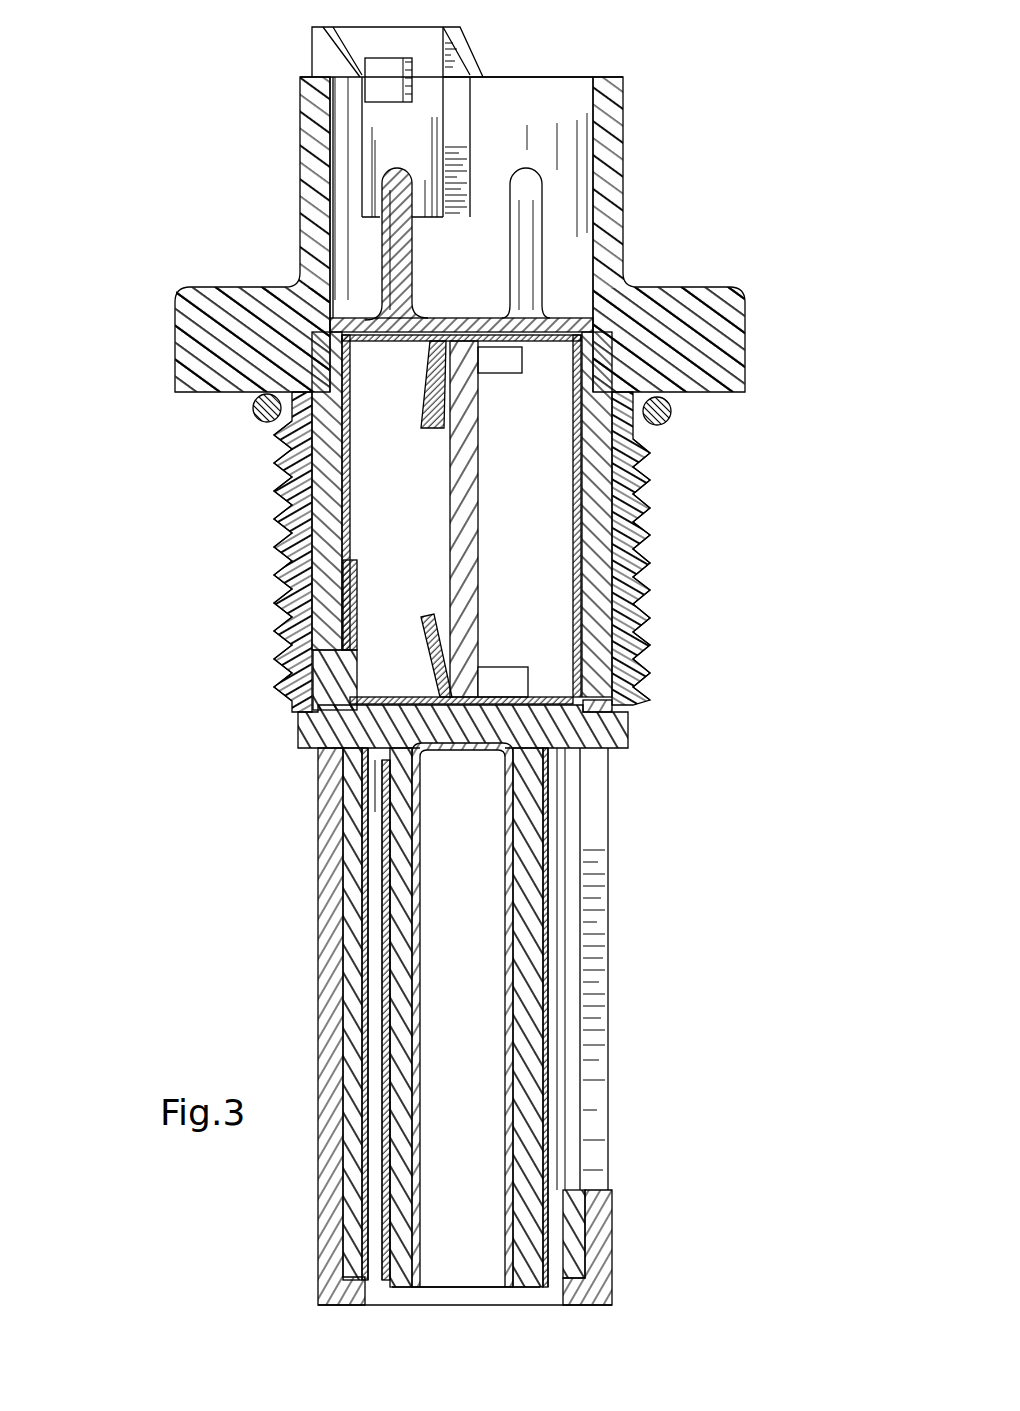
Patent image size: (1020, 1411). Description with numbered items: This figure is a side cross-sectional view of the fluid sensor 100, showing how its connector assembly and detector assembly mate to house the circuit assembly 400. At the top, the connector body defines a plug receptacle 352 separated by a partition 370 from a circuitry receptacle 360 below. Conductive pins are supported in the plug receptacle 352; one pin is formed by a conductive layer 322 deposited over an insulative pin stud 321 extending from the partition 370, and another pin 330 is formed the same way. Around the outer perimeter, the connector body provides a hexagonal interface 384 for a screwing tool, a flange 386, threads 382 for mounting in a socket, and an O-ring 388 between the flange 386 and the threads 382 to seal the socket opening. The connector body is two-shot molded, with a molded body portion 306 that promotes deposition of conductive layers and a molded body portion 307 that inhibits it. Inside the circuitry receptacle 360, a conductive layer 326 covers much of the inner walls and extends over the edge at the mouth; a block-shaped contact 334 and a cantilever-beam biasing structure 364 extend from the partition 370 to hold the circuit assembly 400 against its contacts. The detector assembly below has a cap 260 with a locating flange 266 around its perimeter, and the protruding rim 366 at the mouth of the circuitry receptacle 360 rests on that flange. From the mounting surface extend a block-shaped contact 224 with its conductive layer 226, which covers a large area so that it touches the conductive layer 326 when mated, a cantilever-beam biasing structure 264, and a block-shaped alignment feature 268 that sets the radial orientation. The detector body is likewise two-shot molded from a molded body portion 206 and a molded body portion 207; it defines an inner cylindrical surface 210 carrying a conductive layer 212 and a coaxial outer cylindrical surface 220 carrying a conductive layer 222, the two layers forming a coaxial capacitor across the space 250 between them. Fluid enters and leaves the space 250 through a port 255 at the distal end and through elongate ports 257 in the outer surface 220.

The fluid sensor 100 is at (138, 92).
The plug receptacle 352 is at (497, 110).
The pin 330 is at (537, 167).
The hexagonal interface 384 is at (296, 165).
The partition 370 is at (477, 318).
The conductive layer 322 is at (423, 244).
The pin stud 321 is at (395, 268).
The flange 386 is at (217, 287).
The molded body portion 307 is at (228, 345).
The O-ring 388 is at (262, 418).
The threads 382 is at (283, 500).
The molded body portion 306 is at (288, 575).
The conductive layer 326 is at (352, 373).
The circuitry receptacle 360 is at (375, 524).
The contact 334 is at (494, 378).
The biasing structure 364 is at (427, 422).
The circuit assembly 400 is at (486, 518).
The contact 224 is at (502, 667).
The alignment feature 268 is at (352, 640).
The biasing structure 264 is at (432, 617).
The conductive layer 226 is at (397, 697).
The protruding rim 366 is at (293, 717).
The locating flange 266 is at (297, 727).
The cap 260 is at (657, 718).
The molded body portion 207 is at (625, 730).
The molded body portion 206 is at (350, 820).
The surface 210 is at (545, 808).
The conductive layer 212 is at (557, 828).
The conductive layer 222 is at (357, 983).
The surface 220 is at (370, 1013).
The port 257 is at (570, 958).
The space 250 is at (377, 1120).
The port 255 is at (463, 1292).